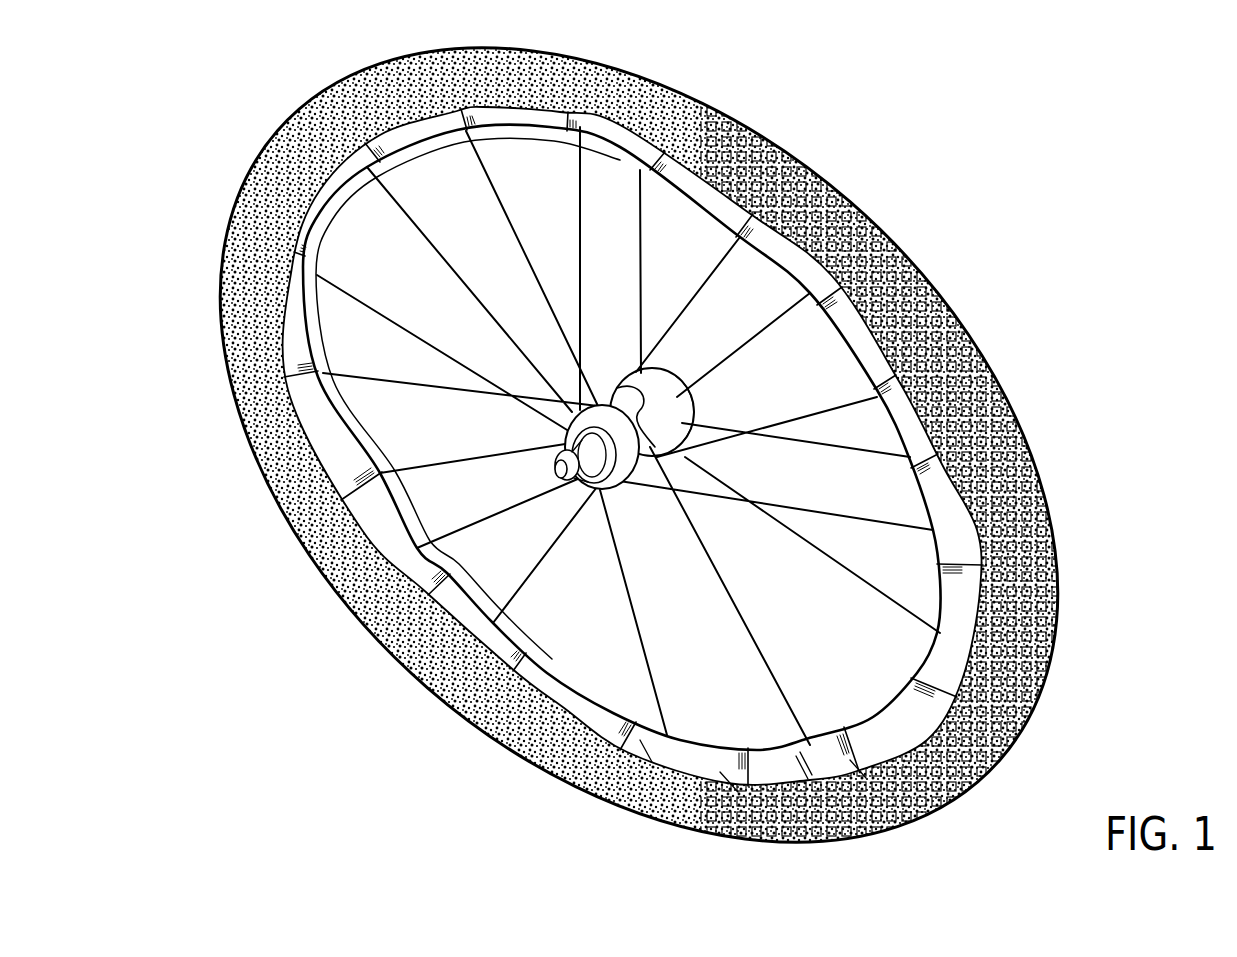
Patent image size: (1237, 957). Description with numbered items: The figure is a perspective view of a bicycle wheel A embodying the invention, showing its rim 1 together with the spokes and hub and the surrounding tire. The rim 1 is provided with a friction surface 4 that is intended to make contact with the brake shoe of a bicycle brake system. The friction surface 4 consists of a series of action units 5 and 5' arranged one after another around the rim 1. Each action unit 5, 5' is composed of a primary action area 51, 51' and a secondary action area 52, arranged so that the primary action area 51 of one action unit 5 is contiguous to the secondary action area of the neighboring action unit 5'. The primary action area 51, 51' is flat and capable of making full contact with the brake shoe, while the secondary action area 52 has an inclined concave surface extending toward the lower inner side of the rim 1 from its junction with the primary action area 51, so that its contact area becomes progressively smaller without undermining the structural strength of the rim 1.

The rim 1 is at (880, 748).
The friction surface 4 is at (915, 800).
The action unit 5 is at (633, 497).
The action unit 5' is at (818, 826).
The primary action area 51 is at (716, 833).
The primary action area 51' is at (876, 830).
The secondary action area 52 is at (805, 770).
The bicycle wheel A is at (1043, 456).